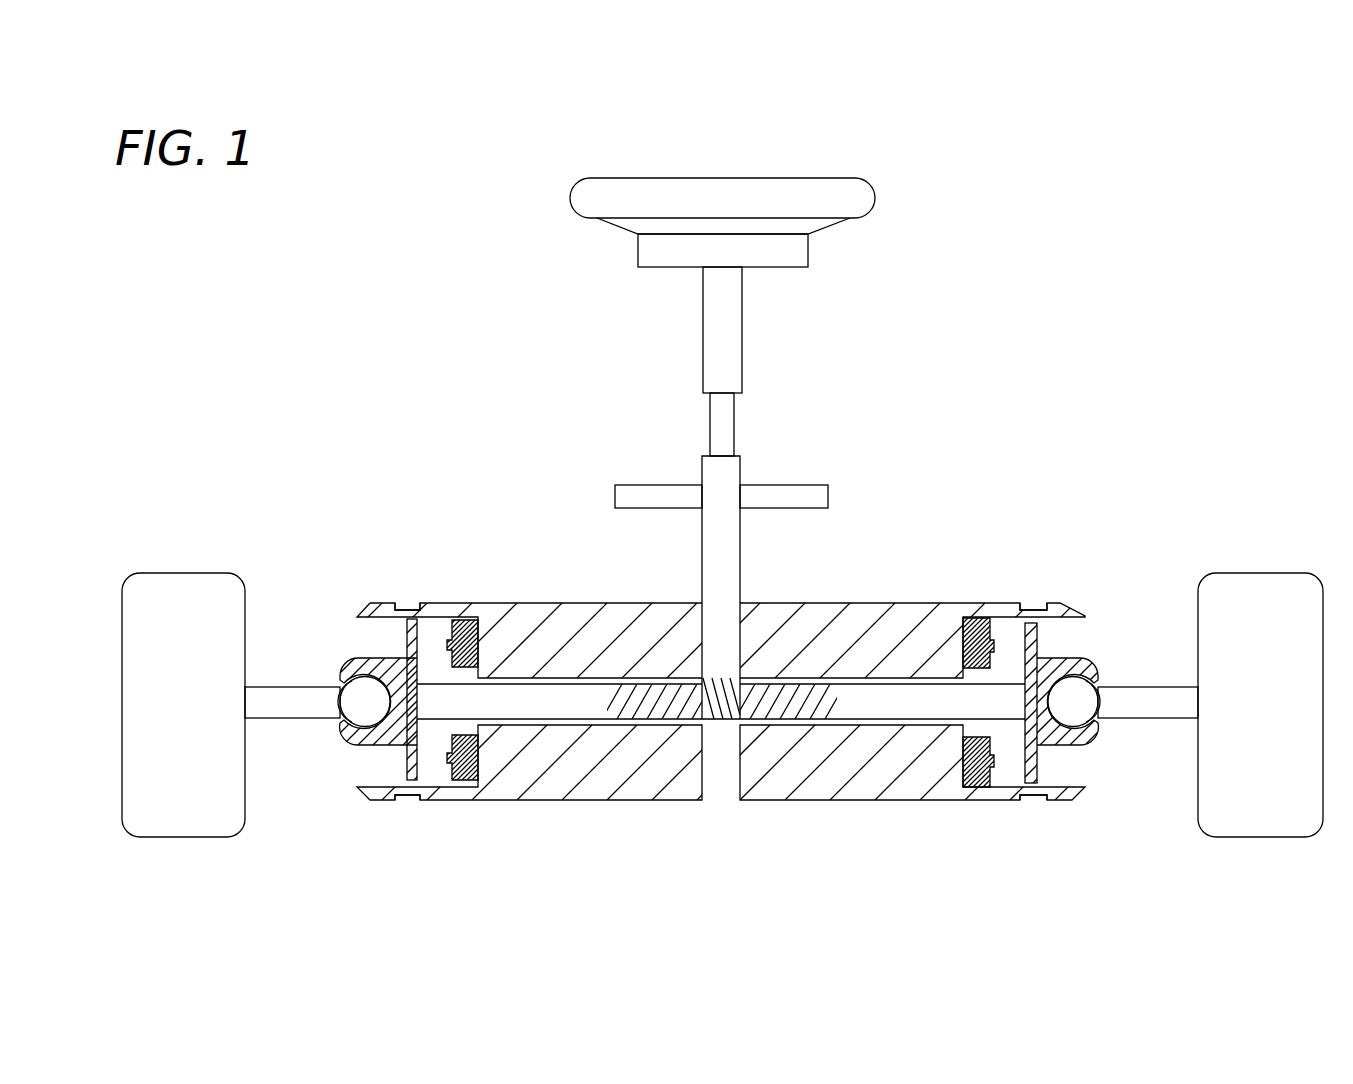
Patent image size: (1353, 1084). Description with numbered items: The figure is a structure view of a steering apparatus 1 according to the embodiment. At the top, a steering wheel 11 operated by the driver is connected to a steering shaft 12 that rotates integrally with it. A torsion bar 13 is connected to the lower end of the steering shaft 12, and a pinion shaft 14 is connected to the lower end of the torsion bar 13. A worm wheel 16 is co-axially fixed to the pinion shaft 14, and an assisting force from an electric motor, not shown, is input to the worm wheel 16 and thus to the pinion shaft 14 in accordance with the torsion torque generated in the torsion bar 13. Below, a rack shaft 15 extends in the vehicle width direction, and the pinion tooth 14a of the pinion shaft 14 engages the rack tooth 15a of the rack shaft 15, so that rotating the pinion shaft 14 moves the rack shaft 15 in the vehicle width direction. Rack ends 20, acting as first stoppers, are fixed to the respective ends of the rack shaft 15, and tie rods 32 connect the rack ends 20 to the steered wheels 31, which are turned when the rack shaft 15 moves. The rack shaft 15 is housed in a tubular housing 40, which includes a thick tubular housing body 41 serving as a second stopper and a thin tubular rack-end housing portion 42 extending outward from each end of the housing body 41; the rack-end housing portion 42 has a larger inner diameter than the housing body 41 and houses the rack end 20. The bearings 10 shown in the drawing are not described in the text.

The steering apparatus 1 is at (418, 287).
The bearing 10 is at (466, 617).
The steering wheel 11 is at (877, 194).
The steering shaft 12 is at (742, 325).
The torsion bar 13 is at (734, 423).
The pinion shaft 14 is at (751, 645).
The pinion tooth 14a is at (708, 722).
The rack shaft 15 is at (721, 759).
The rack tooth 15a is at (663, 722).
The worm wheel 16 is at (828, 492).
The rack end 20 is at (371, 659).
The steered wheel 31 is at (185, 573).
The tie rod 32 is at (292, 688).
The housing 40 is at (711, 657).
The housing body 41 is at (665, 602).
The rack-end housing portion 42 is at (393, 602).